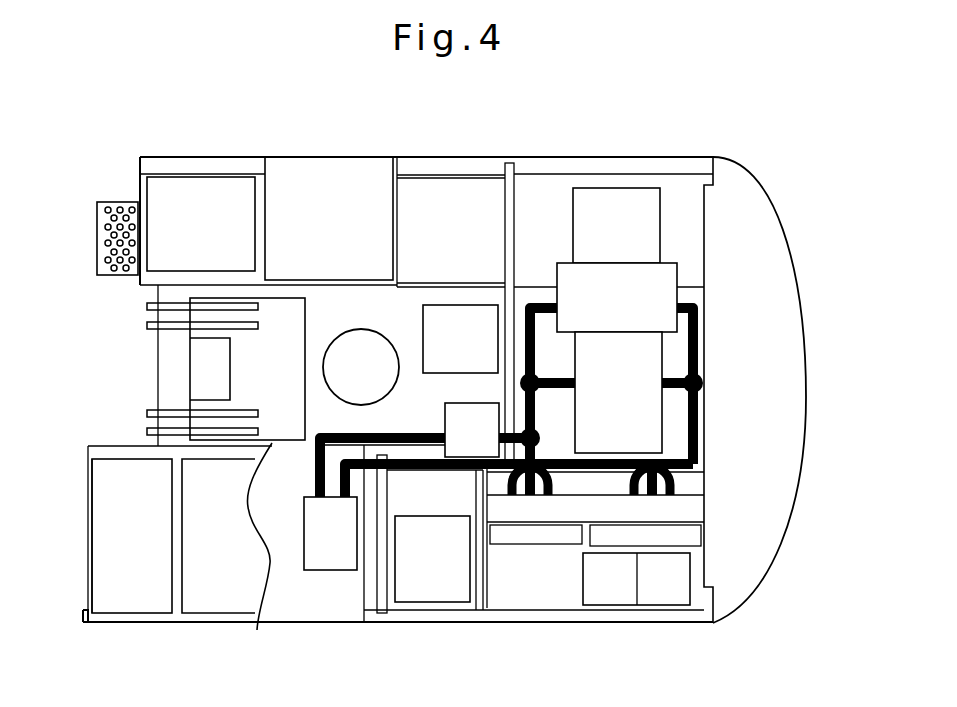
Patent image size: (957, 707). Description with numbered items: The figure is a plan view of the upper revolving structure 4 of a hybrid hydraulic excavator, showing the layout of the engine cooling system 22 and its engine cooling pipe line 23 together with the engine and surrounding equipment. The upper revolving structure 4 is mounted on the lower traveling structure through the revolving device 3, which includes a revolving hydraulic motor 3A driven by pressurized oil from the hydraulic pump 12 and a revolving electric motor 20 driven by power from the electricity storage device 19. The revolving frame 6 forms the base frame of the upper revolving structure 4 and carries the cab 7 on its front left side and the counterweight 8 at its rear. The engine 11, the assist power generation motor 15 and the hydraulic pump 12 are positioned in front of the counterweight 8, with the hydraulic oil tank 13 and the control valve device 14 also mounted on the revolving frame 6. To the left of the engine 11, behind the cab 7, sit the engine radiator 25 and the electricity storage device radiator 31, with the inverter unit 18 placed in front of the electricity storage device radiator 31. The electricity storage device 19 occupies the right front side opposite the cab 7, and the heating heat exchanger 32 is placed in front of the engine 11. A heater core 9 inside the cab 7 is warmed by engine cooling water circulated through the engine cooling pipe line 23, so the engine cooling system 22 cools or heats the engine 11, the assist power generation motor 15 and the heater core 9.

The revolving device 3 is at (343, 348).
The revolving hydraulic motor 3A is at (343, 381).
The revolving electric motor 20 is at (173, 369).
The upper revolving structure 4 is at (528, 150).
The revolving frame 6 is at (656, 162).
The cab 7 is at (222, 573).
The counterweight 8 is at (743, 192).
The heater core 9 is at (327, 550).
The engine 11 is at (632, 397).
The hydraulic pump 12 is at (628, 233).
The hydraulic oil tank 13 is at (313, 185).
The control valve device 14 is at (440, 325).
The assist power generation motor 15 is at (645, 287).
The inverter unit 18 is at (417, 582).
The electricity storage device 19 is at (167, 197).
The engine cooling system 22 is at (705, 355).
The engine cooling pipe line 23 is at (697, 438).
The engine radiator 25 is at (668, 510).
The electricity storage device radiator 31 is at (540, 537).
The heating heat exchanger 32 is at (464, 440).